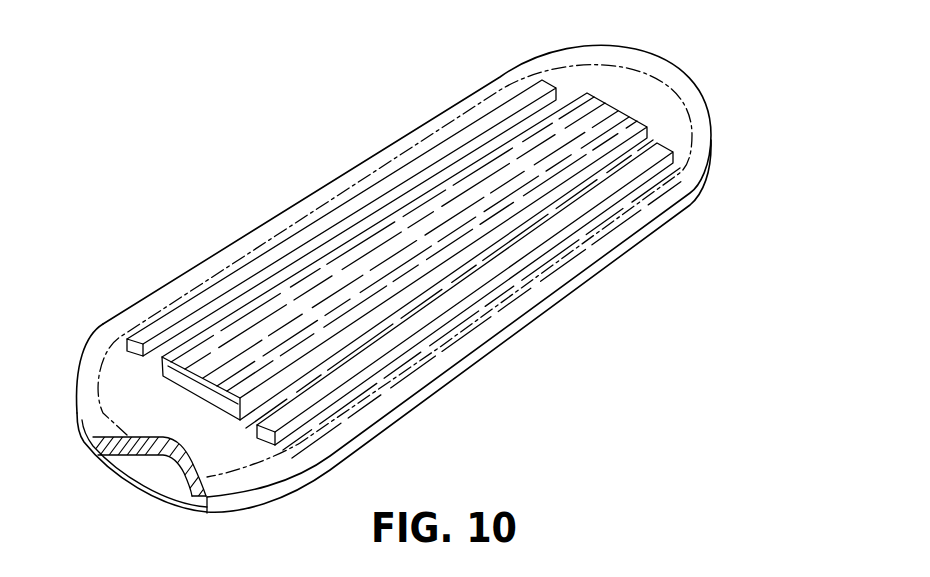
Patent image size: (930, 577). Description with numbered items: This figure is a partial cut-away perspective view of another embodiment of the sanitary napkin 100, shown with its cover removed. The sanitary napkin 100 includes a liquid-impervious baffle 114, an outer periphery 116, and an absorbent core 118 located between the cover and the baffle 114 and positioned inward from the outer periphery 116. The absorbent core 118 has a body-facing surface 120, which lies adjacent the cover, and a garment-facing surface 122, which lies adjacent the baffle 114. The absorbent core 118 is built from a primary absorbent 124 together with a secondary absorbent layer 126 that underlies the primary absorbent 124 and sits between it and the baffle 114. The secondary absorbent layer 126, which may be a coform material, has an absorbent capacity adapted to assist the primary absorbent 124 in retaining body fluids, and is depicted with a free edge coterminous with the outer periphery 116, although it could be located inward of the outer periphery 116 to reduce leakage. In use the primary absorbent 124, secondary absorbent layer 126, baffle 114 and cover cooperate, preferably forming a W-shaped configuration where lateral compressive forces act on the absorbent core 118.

The sanitary napkin 100 is at (304, 134).
The liquid-impervious baffle 114 is at (173, 480).
The outer periphery 116 is at (571, 288).
The absorbent core 118 is at (654, 96).
The body-facing surface 120 is at (330, 267).
The garment-facing surface 122 is at (147, 450).
The primary absorbent 124 is at (497, 180).
The secondary absorbent layer 126 is at (100, 453).